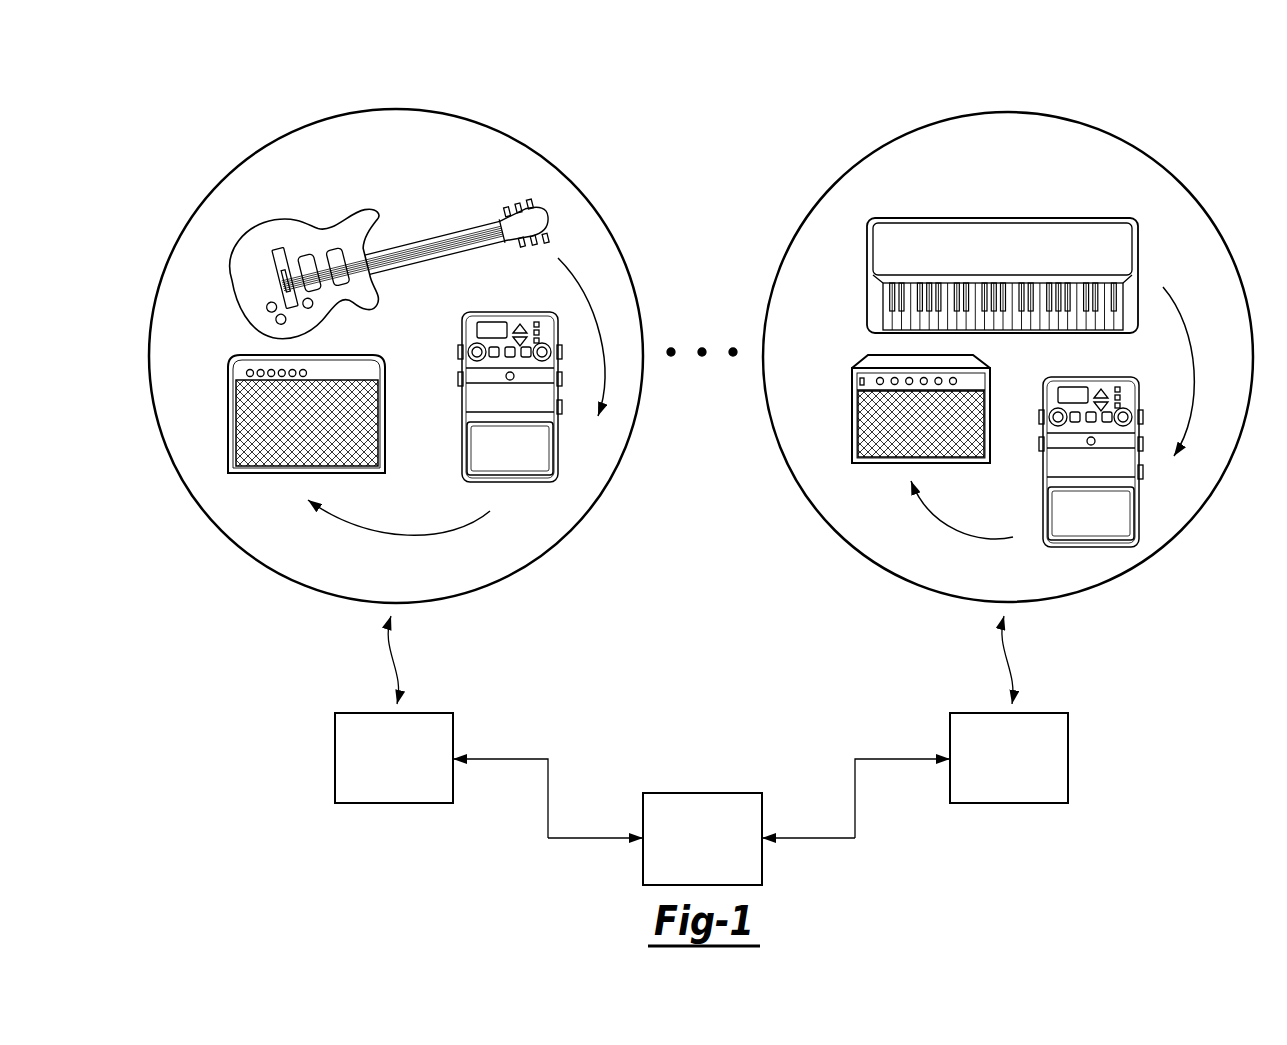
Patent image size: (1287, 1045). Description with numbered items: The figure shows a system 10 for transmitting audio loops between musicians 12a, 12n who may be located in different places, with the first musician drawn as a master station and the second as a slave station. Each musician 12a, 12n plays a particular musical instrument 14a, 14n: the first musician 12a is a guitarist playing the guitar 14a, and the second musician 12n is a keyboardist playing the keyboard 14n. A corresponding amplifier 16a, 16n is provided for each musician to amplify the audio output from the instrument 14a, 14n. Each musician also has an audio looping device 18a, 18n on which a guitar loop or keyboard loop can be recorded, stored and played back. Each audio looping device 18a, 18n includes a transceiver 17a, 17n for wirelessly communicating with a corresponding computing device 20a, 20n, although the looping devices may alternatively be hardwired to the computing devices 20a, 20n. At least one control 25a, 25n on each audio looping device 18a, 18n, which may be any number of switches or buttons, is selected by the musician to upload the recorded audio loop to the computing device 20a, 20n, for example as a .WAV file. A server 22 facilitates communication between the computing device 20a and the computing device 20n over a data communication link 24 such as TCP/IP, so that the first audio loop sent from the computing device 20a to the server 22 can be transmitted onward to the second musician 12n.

The system 10 is at (634, 89).
The musician 12a is at (396, 109).
The musician 12n is at (1008, 112).
The musical instrument 14a is at (265, 218).
The musical instrument 14n is at (932, 218).
The amplifier 16a is at (228, 405).
The amplifier 16n is at (852, 410).
The transceiver 17a is at (482, 405).
The transceiver 17n is at (1062, 468).
The audio looping device 18a is at (512, 484).
The audio looping device 18n is at (1105, 552).
The computing device 20a is at (335, 757).
The computing device 20n is at (1068, 757).
The server 22 is at (700, 793).
The data communication link 24 is at (500, 758).
The control 25a is at (478, 288).
The control 25n is at (1106, 369).